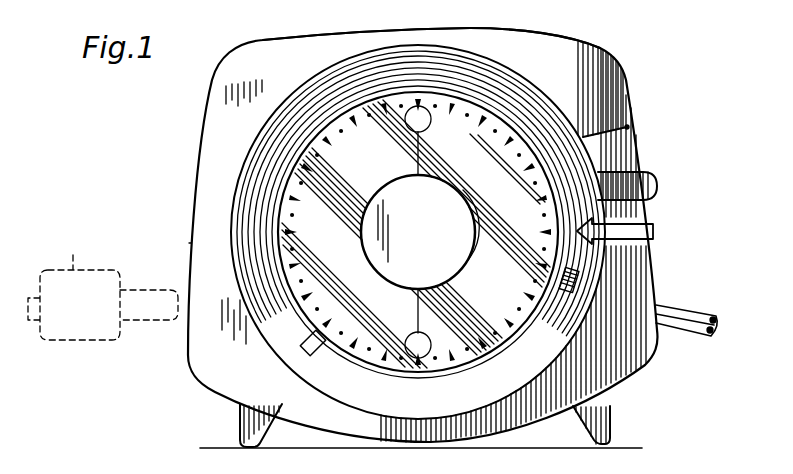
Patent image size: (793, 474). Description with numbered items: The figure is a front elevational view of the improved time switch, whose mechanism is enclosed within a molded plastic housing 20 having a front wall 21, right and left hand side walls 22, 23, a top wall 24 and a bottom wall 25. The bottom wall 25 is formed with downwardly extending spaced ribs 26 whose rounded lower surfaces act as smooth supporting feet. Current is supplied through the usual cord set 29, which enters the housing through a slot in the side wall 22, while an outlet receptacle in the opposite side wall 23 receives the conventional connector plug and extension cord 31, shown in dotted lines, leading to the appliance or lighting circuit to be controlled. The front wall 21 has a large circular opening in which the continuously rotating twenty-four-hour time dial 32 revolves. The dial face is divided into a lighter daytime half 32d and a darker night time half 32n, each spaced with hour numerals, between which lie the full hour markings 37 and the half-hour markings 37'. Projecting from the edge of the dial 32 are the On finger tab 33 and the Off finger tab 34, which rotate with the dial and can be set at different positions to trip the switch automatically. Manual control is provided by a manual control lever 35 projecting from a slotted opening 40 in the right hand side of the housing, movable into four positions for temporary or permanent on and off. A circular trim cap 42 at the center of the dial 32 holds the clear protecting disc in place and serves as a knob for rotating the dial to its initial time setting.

The housing 20 is at (200, 130).
The front wall 21 is at (190, 243).
The right hand side wall 22 is at (660, 275).
The left hand side wall 23 is at (189, 203).
The top wall 24 is at (308, 36).
The bottom wall 25 is at (296, 441).
The ribs 26 is at (240, 421).
The cord set 29 is at (708, 318).
The connector plug and extension cord 31 is at (310, 150).
The time dial 32 is at (490, 118).
The daytime half of dial 32d is at (521, 150).
The night time half of dial 32n is at (313, 187).
The On finger tab 33 is at (304, 352).
The Off finger tab 34 is at (580, 286).
The manual control lever 35 is at (657, 183).
The full hour markings 37 is at (584, 308).
The half-hour markings 37' is at (418, 232).
The slotted opening 40 is at (630, 127).
The trim cap 42 is at (388, 184).